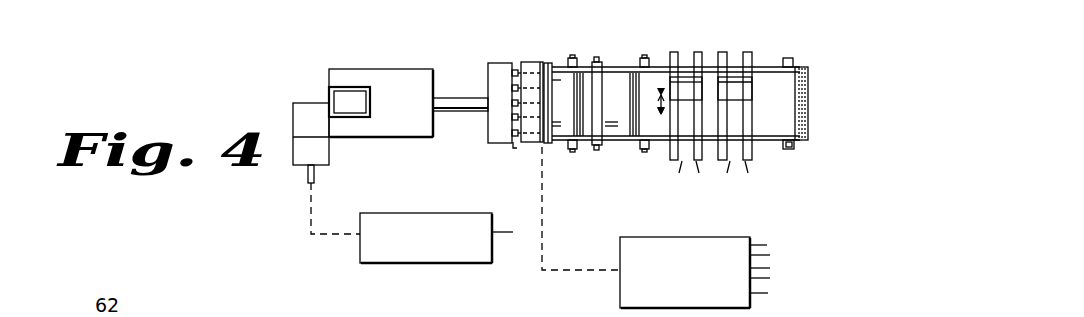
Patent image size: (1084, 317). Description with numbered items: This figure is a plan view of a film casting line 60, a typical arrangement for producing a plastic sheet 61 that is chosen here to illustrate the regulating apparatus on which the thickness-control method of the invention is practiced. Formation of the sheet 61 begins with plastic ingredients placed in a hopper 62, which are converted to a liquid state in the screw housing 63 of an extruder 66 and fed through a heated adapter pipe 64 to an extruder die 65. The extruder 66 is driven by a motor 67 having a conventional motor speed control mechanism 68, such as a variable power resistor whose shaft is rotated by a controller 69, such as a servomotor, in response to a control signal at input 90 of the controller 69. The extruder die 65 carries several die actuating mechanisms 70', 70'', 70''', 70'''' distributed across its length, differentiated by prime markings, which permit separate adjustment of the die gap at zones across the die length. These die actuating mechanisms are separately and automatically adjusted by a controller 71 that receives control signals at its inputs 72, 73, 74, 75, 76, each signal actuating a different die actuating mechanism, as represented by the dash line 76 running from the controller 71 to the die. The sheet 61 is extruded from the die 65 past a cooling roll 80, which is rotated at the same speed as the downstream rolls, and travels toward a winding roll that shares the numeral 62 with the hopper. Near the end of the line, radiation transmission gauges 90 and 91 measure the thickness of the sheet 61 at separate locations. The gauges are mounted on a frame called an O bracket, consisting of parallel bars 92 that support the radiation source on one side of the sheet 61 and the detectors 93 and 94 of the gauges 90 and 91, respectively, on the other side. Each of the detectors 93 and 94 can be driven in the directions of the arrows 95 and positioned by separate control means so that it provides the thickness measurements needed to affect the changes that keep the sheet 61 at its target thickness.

The film casting line 60 is at (650, 122).
The sheet 61 is at (618, 63).
The hopper 62 is at (350, 87).
The screw housing 63 is at (400, 80).
The heated adapter pipe 64 is at (457, 96).
The extruder die 65 is at (495, 62).
The extruder 66 is at (322, 84).
The motor 67 is at (302, 117).
The motor speed control mechanism 68 is at (302, 156).
The controller 69 is at (431, 204).
The die actuating mechanism 70' is at (533, 88).
The die actuating mechanism 70'' is at (505, 81).
The die actuating mechanism 70''' is at (505, 120).
The die actuating mechanism 70'''' is at (523, 153).
The controller 71 is at (703, 243).
The input 72 is at (758, 245).
The input 73 is at (768, 255).
The input 74 is at (766, 268).
The input 75 is at (768, 278).
The input 76 is at (544, 202).
The cooling roll 80 is at (549, 63).
The radiation transmission gauge 90 is at (682, 64).
The radiation transmission gauge 91 is at (732, 74).
The parallel bars 92 is at (711, 177).
The detector 93 is at (667, 83).
The detector 94 is at (749, 89).
The arrows 95 is at (662, 116).